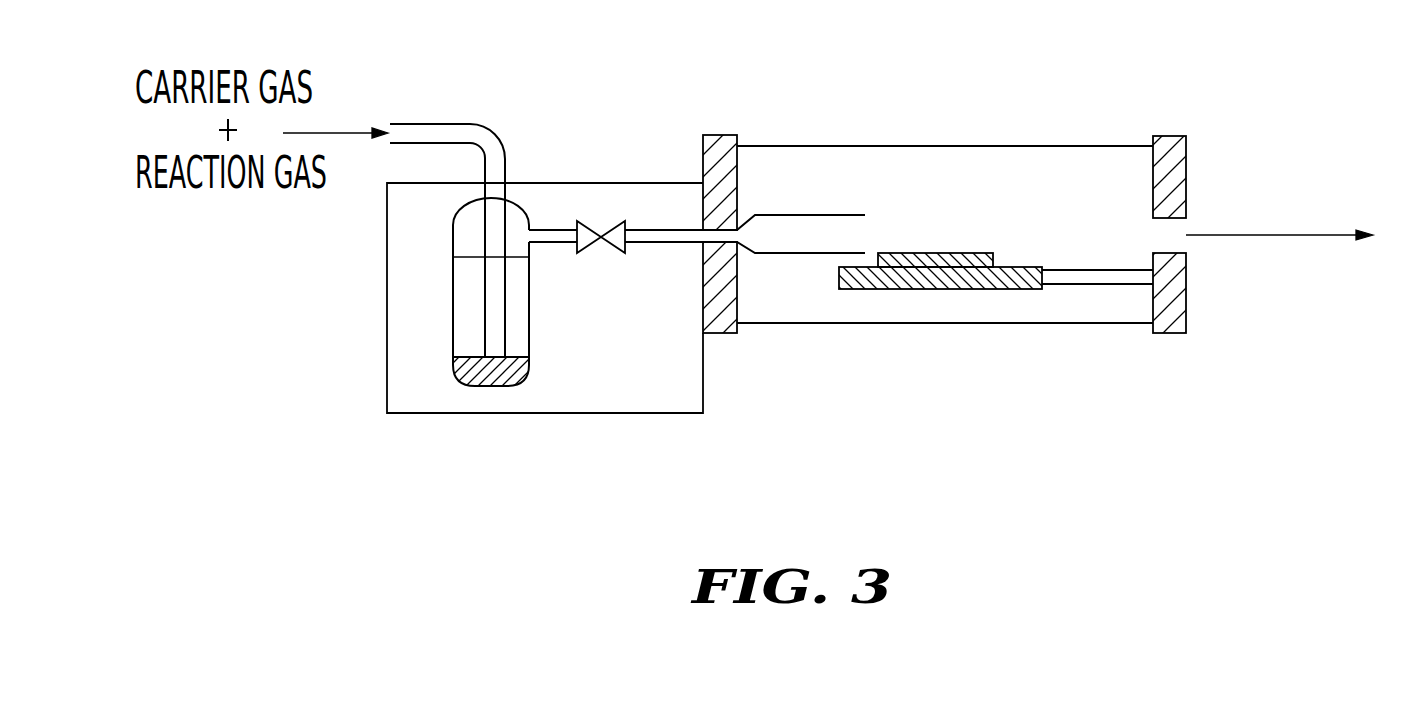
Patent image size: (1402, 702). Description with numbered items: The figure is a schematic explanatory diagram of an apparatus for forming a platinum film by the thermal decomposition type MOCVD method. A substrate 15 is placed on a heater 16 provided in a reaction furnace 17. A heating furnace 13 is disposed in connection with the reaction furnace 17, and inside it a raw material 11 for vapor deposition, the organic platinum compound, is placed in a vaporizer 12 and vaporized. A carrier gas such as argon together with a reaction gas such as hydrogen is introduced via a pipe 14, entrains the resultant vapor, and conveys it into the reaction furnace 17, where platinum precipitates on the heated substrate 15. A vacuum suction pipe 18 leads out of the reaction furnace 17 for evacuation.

The raw material for vapor deposition 11 is at (477, 384).
The vaporizer 12 is at (453, 362).
The heating furnace 13 is at (645, 413).
The pipe 14 is at (478, 126).
The substrate 15 is at (963, 253).
The heater 16 is at (965, 290).
The reaction furnace 17 is at (1088, 146).
The vacuum suction pipe 18 is at (1265, 235).